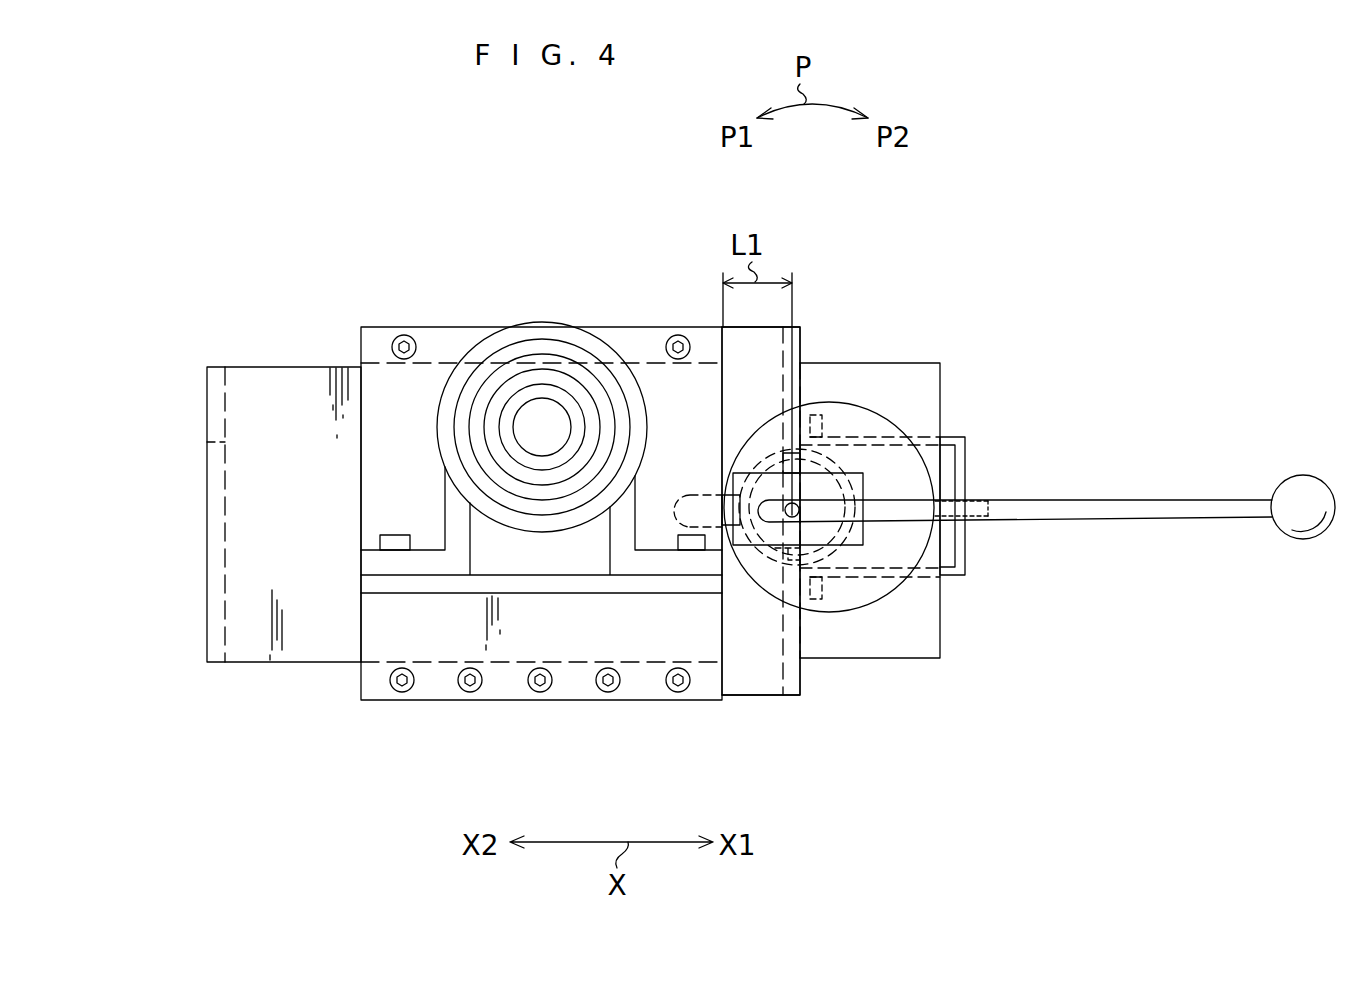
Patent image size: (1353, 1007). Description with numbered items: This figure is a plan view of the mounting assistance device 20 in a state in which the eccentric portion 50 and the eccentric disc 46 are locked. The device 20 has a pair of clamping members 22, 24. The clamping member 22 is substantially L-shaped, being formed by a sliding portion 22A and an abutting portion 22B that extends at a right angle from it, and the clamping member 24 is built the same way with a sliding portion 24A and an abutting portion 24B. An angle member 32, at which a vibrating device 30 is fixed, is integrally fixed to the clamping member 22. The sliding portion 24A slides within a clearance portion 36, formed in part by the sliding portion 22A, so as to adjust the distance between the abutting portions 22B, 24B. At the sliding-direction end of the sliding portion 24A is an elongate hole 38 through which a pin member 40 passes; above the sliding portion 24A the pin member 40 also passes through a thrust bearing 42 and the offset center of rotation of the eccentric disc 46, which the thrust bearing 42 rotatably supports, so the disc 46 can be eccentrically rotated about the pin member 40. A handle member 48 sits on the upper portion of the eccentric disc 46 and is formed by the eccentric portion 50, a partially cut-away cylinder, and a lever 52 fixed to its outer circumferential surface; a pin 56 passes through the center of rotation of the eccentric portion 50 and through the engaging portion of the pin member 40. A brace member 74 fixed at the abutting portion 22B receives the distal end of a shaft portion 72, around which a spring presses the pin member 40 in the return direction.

The mounting assistance device 20 is at (390, 278).
The clamping member 22 is at (808, 705).
The sliding portion 22A is at (755, 700).
The abutting portion 22B is at (805, 682).
The clamping member 24 is at (225, 347).
The sliding portion 24A is at (308, 400).
The abutting portion 24B is at (210, 513).
The vibrating device 30 is at (545, 410).
The angle member 32 is at (512, 648).
The clearance portion 36 is at (553, 662).
The elongate hole 38 is at (698, 495).
The pin member 40 is at (745, 580).
The thrust bearing 42 is at (853, 600).
The eccentric disc 46 is at (885, 432).
The handle member 48 is at (1205, 482).
The eccentric portion 50 is at (850, 470).
The lever 52 is at (1139, 508).
The pin 56 is at (782, 530).
The shaft portion 72 is at (985, 520).
The brace member 74 is at (965, 457).